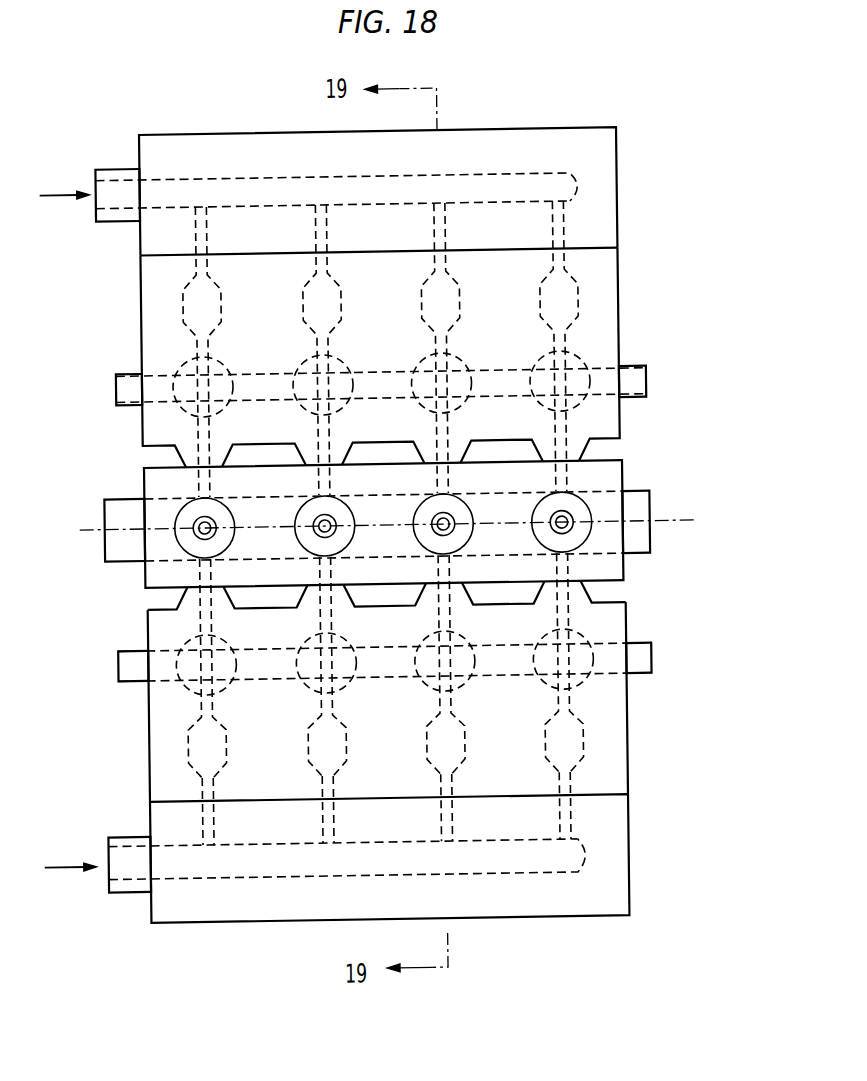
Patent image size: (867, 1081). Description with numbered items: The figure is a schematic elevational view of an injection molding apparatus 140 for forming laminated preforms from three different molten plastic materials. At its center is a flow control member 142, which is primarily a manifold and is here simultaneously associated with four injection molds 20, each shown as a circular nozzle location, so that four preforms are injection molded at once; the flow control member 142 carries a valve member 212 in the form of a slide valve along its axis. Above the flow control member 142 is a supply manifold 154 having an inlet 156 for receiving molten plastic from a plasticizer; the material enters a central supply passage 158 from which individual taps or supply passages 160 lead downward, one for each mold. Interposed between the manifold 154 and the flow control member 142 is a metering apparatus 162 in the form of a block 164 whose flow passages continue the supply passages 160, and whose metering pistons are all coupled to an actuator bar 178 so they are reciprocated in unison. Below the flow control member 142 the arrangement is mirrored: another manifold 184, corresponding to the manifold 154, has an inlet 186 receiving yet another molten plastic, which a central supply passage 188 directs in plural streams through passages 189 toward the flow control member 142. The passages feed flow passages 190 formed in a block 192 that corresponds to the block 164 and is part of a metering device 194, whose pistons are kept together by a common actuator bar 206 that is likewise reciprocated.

The injection molding apparatus 140 is at (645, 207).
The supply manifold 154 is at (608, 158).
The inlet 156 is at (108, 169).
The central supply passage 158 is at (260, 178).
The supply passages 160 is at (206, 233).
The metering apparatus 162 is at (626, 311).
The block 164 is at (608, 273).
The actuator bar 178 is at (644, 394).
The central flow control member 142 is at (648, 506).
The injection mold 20 is at (234, 520).
The valve member 212 is at (647, 547).
The metering device 194 is at (625, 620).
The common actuator bar 206 is at (646, 672).
The block 192 is at (618, 761).
The flow passages 190 is at (327, 791).
The passages 189 is at (207, 832).
The central supply passage 188 is at (301, 881).
The manifold 184 is at (614, 898).
The inlet 186 is at (116, 892).